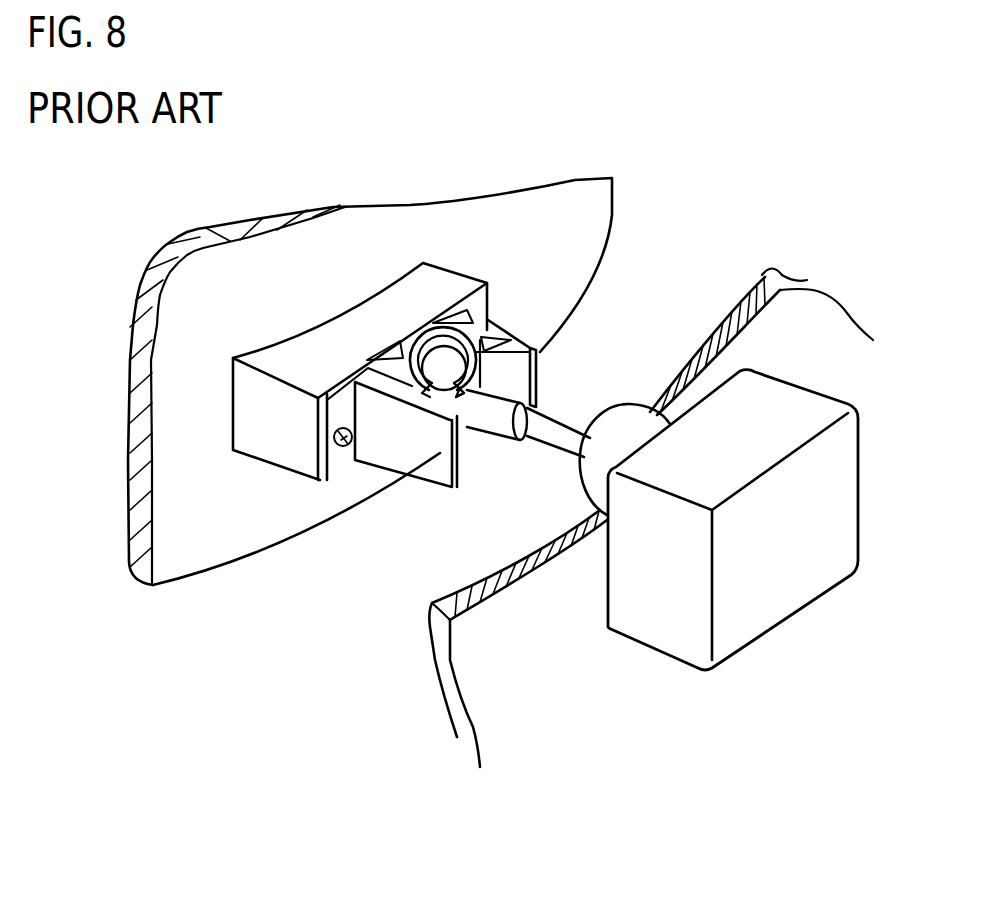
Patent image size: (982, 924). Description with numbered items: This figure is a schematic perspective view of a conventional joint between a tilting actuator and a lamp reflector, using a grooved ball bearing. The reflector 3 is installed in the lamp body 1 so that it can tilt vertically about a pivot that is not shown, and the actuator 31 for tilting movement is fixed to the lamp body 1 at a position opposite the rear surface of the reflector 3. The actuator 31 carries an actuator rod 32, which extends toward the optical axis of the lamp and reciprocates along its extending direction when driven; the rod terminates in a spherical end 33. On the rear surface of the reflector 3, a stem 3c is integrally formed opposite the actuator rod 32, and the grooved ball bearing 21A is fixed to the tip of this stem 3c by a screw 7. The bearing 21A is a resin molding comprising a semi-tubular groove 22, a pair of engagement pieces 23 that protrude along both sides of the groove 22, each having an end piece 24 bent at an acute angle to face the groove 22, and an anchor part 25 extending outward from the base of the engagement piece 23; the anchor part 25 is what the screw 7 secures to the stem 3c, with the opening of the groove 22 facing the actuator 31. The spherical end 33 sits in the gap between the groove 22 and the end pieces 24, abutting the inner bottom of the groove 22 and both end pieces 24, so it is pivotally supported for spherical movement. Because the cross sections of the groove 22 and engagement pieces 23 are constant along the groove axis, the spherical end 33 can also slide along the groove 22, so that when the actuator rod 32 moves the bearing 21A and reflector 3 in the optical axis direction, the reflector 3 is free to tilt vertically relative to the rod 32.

The lamp body 1 is at (767, 340).
The reflector 3 is at (375, 230).
The stem 3c is at (270, 447).
The screw 7 is at (345, 447).
The grooved ball bearing 21A is at (495, 323).
The groove 22 is at (443, 350).
The engagement piece 23 is at (512, 338).
The end piece 24 is at (508, 393).
The anchor part 25 is at (483, 323).
The actuator 31 is at (653, 637).
The actuator rod 32 is at (540, 430).
The spherical end 33 is at (460, 387).